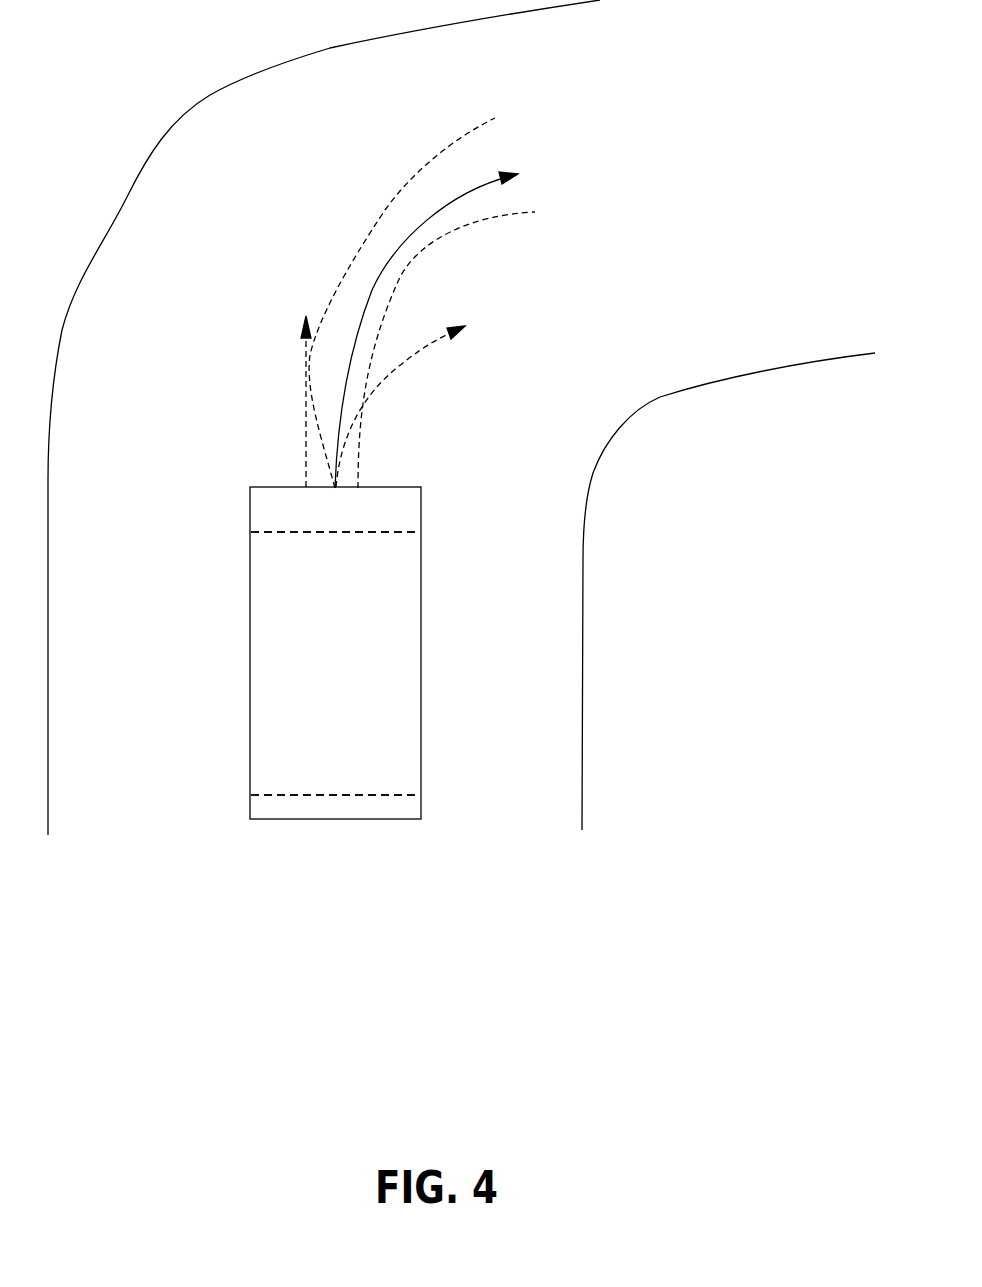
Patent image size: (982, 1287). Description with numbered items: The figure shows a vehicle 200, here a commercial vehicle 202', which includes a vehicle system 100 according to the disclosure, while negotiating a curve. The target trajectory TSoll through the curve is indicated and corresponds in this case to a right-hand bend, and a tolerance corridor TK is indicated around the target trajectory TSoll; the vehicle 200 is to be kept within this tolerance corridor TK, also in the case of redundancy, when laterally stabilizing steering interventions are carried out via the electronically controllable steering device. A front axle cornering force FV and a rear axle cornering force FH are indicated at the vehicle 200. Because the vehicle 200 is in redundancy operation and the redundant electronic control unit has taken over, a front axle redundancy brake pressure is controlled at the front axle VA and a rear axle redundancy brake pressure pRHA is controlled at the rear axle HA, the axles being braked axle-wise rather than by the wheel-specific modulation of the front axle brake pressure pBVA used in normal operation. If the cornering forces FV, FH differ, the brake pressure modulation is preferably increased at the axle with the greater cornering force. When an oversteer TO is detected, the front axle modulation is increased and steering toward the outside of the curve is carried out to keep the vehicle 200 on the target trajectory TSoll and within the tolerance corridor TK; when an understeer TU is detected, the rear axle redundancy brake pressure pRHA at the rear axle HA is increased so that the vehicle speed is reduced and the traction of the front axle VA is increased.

The target trajectory TSoll is at (395, 253).
The understeer TU is at (303, 342).
The oversteer TO is at (403, 363).
The tolerance corridor TK is at (475, 235).
The front axle VA is at (435, 513).
The rear axle HA is at (434, 800).
The front axle cornering force FV is at (227, 532).
The rear axle cornering force FH is at (227, 795).
The front axle brake pressure pBVA is at (287, 533).
The rear axle redundancy brake pressure pRHA is at (337, 796).
The vehicle system 100 is at (360, 644).
The vehicle 200 is at (360, 744).
The steering actuator 202' is at (335, 765).